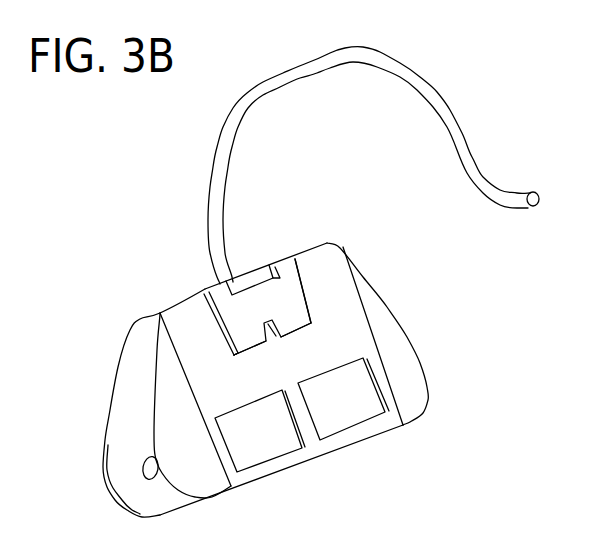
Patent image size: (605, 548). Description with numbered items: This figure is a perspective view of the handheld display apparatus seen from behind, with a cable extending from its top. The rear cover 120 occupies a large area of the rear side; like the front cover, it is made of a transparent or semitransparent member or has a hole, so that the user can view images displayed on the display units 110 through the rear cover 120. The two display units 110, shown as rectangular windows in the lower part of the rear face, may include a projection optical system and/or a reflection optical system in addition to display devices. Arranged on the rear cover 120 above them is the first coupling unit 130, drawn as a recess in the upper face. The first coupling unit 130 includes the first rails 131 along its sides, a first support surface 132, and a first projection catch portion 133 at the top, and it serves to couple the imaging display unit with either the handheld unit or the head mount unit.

The display units 110 is at (263, 435).
The rear cover 120 is at (130, 393).
The first coupling unit 130 is at (295, 296).
The first rails 131 is at (207, 315).
The first support surface 132 is at (305, 341).
The first projection catch portion 133 is at (250, 277).